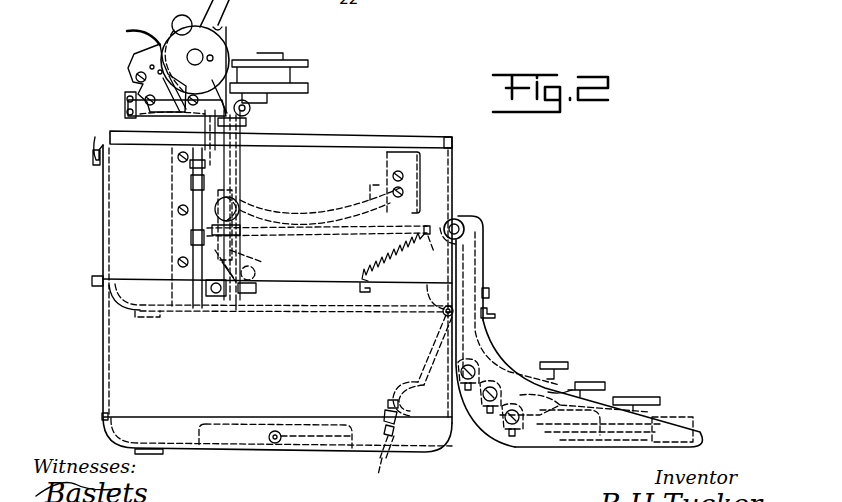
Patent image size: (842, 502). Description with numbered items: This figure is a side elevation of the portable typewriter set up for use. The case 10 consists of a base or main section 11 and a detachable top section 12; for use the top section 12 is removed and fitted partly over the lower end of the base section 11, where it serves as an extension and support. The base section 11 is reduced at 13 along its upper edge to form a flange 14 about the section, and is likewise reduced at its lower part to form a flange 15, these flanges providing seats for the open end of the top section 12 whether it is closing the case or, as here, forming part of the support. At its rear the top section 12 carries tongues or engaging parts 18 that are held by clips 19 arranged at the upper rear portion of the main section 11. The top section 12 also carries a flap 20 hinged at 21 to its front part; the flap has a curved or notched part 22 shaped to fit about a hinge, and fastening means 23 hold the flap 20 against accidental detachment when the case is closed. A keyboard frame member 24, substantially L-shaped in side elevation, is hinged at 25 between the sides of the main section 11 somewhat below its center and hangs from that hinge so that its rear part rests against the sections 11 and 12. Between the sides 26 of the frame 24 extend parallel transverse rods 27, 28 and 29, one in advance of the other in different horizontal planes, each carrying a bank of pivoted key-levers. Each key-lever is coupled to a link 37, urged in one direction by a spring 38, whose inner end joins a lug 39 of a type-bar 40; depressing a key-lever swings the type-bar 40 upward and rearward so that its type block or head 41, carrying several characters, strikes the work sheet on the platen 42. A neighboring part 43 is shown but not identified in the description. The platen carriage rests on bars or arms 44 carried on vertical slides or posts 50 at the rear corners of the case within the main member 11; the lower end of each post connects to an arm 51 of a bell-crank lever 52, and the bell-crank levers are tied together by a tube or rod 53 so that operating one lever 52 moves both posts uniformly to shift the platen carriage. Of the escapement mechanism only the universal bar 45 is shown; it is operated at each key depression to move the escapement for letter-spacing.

The case 10 is at (440, 187).
The base or main section 11 is at (104, 218).
The top section 12 is at (118, 356).
The reduced part 13 is at (452, 143).
The flange 14 is at (380, 145).
The flange 15 is at (100, 302).
The tongues or engaging parts 18 is at (93, 286).
The clips 19 is at (93, 152).
The flap 20 is at (418, 360).
The hinge 21 is at (440, 318).
The curved or notched part 22 is at (388, 398).
The fastening means 23 is at (382, 466).
The keyboard frame member 24 is at (492, 342).
The hinge 25 is at (463, 225).
The sides 26 is at (537, 433).
The transversely extending rod 27 is at (467, 391).
The transversely extending rod 28 is at (489, 414).
The transversely extending rod 29 is at (511, 437).
The link 37 is at (352, 223).
The spring 38 is at (397, 262).
The lug 39 is at (240, 255).
The type-bar 40 is at (362, 196).
The type block or head 41 is at (378, 175).
The platen 42 is at (163, 42).
The bracket plate 43 is at (130, 72).
The bars or arms 44 is at (127, 110).
The universal bar 45 is at (488, 312).
The slides or posts 50 is at (228, 290).
The arm 51 is at (236, 312).
The bell-crank lever 52 is at (256, 270).
The tube or rod 53 is at (258, 288).